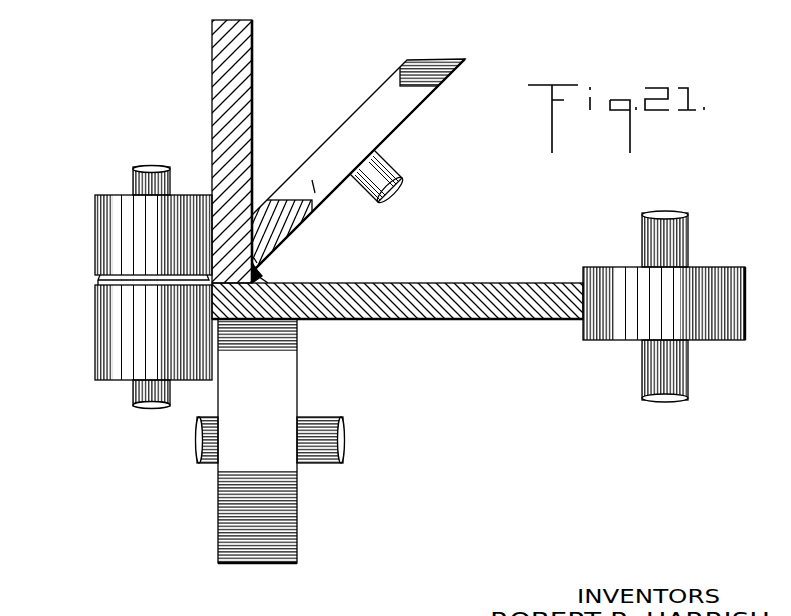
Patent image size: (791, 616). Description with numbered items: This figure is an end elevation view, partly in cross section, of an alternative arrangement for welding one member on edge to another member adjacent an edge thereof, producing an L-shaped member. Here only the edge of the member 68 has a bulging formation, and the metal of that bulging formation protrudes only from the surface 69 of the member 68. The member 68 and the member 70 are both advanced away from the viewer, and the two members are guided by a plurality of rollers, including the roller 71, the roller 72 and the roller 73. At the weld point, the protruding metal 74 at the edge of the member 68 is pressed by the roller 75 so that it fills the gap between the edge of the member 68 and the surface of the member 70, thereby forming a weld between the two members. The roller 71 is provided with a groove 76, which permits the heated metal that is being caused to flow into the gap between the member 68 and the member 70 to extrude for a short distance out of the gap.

The member 68 is at (232, 45).
The surface 69 is at (252, 152).
The member 70 is at (424, 290).
The roller 71 is at (117, 335).
The roller 72 is at (261, 548).
The roller 73 is at (630, 316).
The protruding metal 74 is at (263, 253).
The roller 75 is at (393, 113).
The groove 76 is at (96, 282).